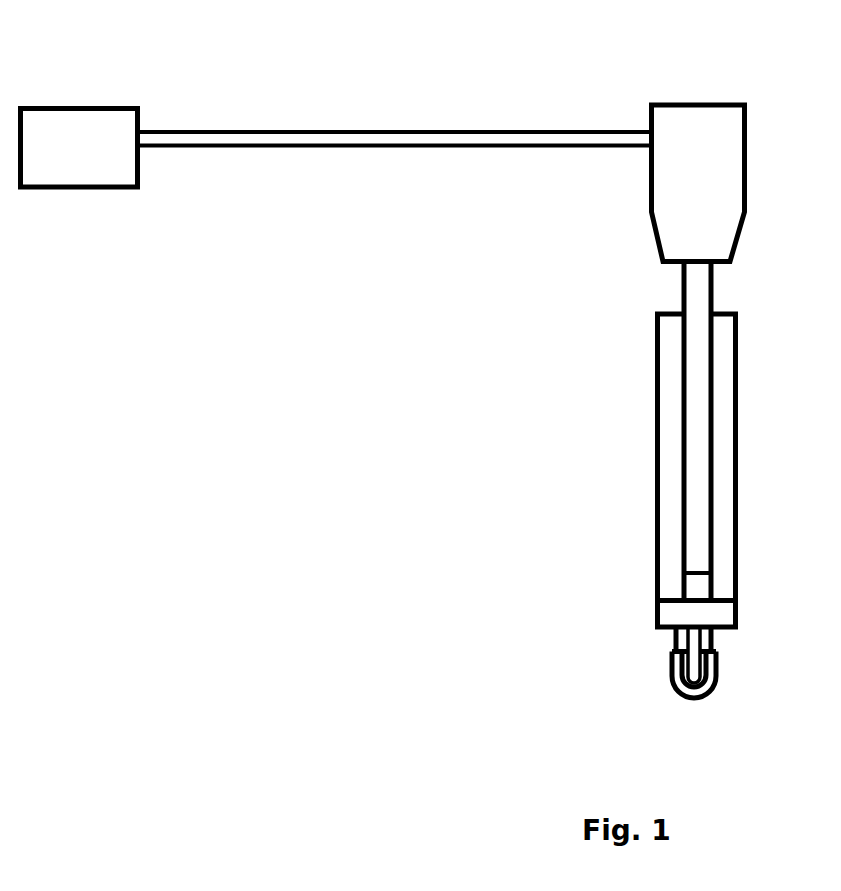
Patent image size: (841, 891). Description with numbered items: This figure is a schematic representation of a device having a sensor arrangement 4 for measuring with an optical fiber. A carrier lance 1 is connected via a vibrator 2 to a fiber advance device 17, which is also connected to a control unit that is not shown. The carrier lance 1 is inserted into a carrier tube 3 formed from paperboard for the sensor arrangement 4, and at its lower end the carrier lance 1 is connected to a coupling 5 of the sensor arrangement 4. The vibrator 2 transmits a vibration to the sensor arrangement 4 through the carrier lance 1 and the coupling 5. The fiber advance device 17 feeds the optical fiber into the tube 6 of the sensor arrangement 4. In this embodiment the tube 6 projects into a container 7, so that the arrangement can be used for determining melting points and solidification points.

The fiber advance device 17 is at (85, 128).
The vibrator 2 is at (723, 171).
The carrier lance 1 is at (697, 287).
The carrier tube 3 is at (723, 444).
The coupling 5 is at (693, 590).
The sensor arrangement 4 is at (745, 610).
The tube 6 is at (697, 645).
The container 7 is at (718, 697).